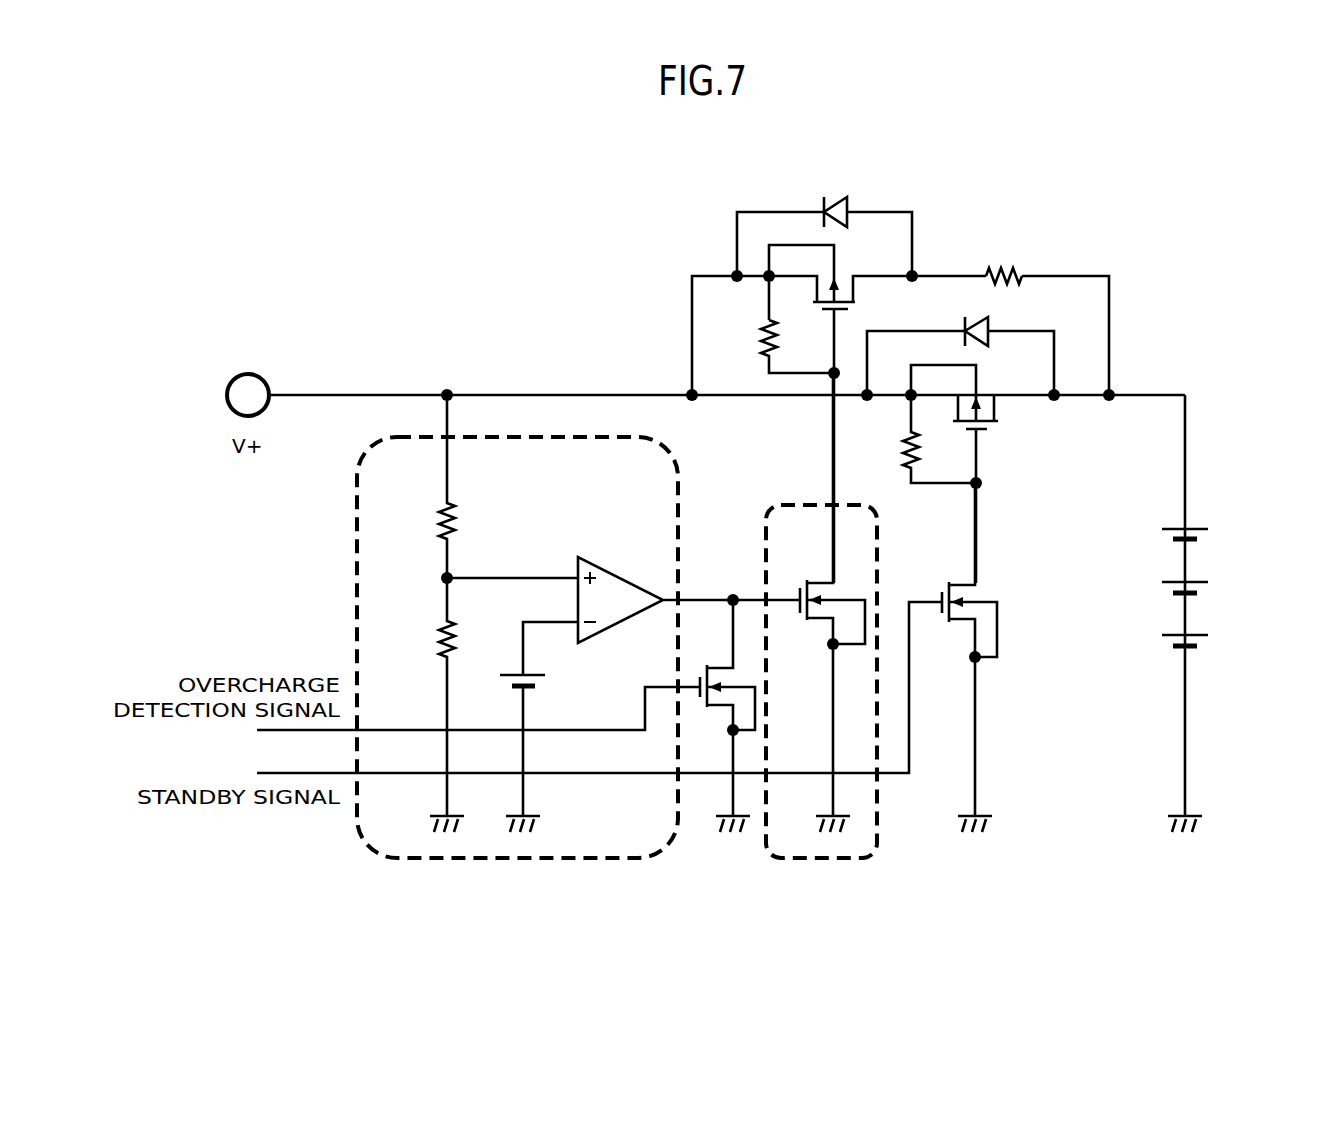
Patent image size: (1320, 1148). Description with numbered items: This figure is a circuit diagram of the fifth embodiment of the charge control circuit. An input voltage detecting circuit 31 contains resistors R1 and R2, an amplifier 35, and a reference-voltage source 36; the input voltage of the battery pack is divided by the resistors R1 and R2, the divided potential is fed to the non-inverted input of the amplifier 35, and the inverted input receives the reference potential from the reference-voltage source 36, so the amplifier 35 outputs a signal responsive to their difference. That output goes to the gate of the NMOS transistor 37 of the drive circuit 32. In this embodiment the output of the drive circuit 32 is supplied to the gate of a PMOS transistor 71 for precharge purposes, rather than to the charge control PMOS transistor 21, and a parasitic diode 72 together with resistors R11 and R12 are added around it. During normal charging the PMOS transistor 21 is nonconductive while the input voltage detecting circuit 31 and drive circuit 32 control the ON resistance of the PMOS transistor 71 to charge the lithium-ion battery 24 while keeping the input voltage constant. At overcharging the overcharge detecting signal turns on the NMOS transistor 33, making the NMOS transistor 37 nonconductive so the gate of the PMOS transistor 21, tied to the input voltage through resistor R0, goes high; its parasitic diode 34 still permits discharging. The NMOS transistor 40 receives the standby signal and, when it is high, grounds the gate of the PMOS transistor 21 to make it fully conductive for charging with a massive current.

The parasitic diode 72 is at (843, 190).
The PMOS transistor 71 is at (866, 297).
The resistor R11 is at (769, 324).
The resistor R12 is at (1009, 258).
The parasitic diode 34 is at (999, 306).
The PMOS transistor 21 is at (1000, 433).
The resistor R0 is at (920, 439).
The lithium-ion battery 24 is at (1230, 569).
The input voltage detecting circuit 31 is at (363, 845).
The resistor R1 is at (465, 486).
The resistor R2 is at (465, 697).
The amplifier 35 is at (616, 573).
The reference-voltage source 36 is at (549, 683).
The NMOS transistor 33 is at (713, 713).
The drive circuit 32 is at (765, 857).
The NMOS transistor 37 is at (803, 631).
The NMOS transistor 40 is at (949, 635).